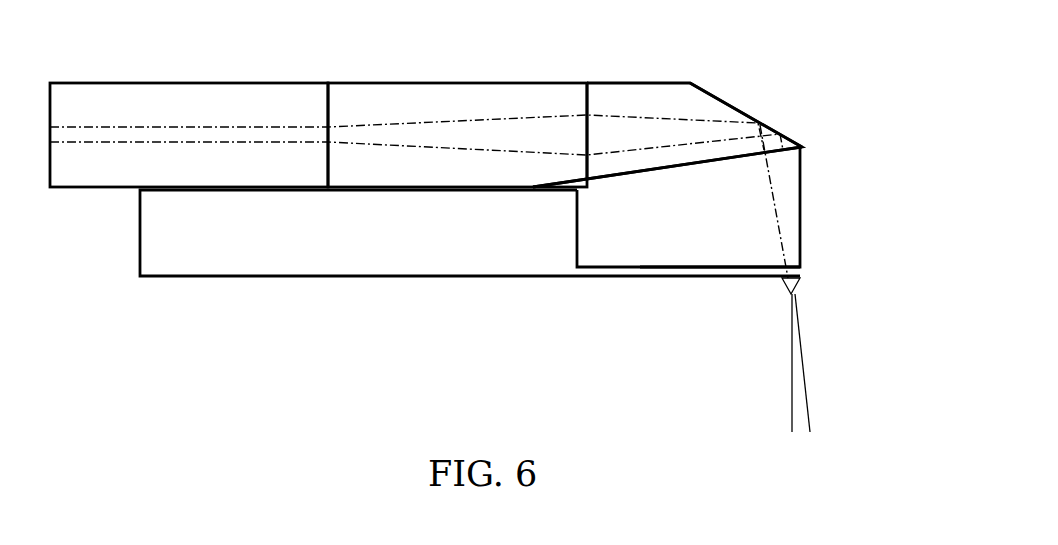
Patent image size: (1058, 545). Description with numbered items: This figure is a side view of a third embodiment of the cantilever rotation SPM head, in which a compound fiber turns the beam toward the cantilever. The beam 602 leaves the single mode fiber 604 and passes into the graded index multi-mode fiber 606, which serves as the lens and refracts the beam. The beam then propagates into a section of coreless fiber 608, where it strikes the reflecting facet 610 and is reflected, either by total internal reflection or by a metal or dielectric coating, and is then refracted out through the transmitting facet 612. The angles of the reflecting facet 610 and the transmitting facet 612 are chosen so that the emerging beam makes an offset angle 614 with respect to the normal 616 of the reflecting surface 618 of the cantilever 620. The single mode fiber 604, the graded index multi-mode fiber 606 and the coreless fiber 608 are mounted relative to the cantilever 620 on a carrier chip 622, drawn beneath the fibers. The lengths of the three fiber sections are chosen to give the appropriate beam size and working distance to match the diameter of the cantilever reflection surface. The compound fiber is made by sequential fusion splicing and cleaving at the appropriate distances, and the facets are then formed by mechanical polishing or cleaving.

The beam 602 is at (68, 83).
The single mode fiber 604 is at (200, 83).
The graded index multi-mode fiber 606 is at (378, 83).
The coreless fiber 608 is at (657, 83).
The reflecting facet 610 is at (718, 102).
The transmitting facet 612 is at (720, 160).
The offset angle 614 is at (800, 420).
The normal 616 is at (790, 360).
The reflecting surface 618 is at (697, 267).
The cantilever 620 is at (622, 279).
The carrier chip 622 is at (397, 277).